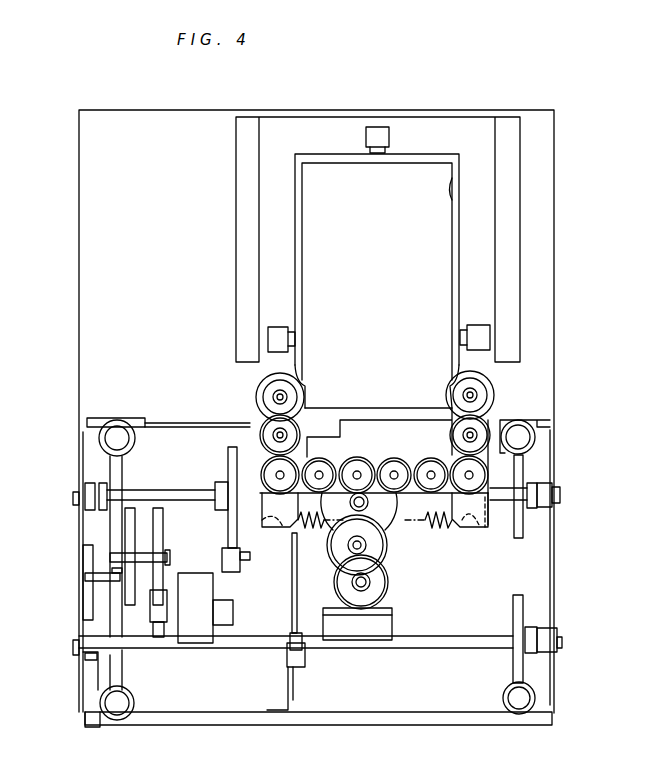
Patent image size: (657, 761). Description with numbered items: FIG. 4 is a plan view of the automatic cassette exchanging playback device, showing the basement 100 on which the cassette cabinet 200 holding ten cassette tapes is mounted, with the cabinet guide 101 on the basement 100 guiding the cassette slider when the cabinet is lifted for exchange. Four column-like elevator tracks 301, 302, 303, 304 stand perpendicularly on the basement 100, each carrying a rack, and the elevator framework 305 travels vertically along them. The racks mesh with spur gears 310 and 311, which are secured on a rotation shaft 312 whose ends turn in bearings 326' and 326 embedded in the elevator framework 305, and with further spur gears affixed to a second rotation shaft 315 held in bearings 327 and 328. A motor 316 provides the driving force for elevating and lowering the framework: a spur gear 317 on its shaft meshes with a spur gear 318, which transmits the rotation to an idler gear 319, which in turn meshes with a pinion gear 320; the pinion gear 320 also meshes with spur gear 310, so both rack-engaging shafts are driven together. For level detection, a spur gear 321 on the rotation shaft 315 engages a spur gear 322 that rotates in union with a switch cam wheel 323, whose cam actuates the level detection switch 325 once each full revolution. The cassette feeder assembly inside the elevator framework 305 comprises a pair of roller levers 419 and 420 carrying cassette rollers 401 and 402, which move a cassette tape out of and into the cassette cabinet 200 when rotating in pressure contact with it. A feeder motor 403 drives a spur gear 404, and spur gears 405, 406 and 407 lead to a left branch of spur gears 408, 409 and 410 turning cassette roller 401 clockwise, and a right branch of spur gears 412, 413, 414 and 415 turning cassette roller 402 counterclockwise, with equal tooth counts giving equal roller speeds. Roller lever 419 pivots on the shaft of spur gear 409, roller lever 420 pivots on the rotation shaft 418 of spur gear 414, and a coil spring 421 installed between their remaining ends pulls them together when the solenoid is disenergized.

The basement 100 is at (582, 83).
The cassette cabinet 200 is at (437, 172).
The cabinet guide 101 is at (390, 128).
The elevator track 301 is at (117, 722).
The elevator track 302 is at (537, 700).
The elevator track 303 is at (120, 418).
The elevator track 304 is at (533, 440).
The elevator framework 305 is at (556, 560).
The spur gear 310 is at (117, 675).
The spur gear 311 is at (513, 612).
The rotation shaft 312 is at (440, 650).
The rotation shaft 315 is at (188, 495).
The motor 316 is at (222, 640).
The spur gear 317 is at (158, 625).
The spur gear 318 is at (164, 522).
The idler gear 319 is at (110, 556).
The pinion gear 320 is at (112, 577).
The spur gear 321 is at (230, 462).
The spur gear 322 is at (226, 572).
The switch cam wheel 323 is at (292, 622).
The level detection switch 325 is at (296, 664).
The bearing 326 is at (569, 638).
The bearing 326' is at (58, 671).
The bearing 327 is at (85, 496).
The bearing 328 is at (545, 500).
The cassette roller 401 is at (257, 390).
The cassette roller 402 is at (493, 398).
The feeder motor 403 is at (389, 582).
The spur gear 404 is at (372, 587).
The spur gear 405 is at (380, 548).
The spur gear 406 is at (378, 508).
The spur gear 407 is at (357, 470).
The spur gear 408 is at (294, 472).
The spur gear 409 is at (319, 470).
The spur gear 410 is at (262, 430).
The spur gear 412 is at (394, 470).
The spur gear 413 is at (431, 470).
The spur gear 414 is at (477, 478).
The spur gear 415 is at (478, 430).
The rotation shaft 418 is at (470, 482).
The roller lever 419 is at (262, 468).
The roller lever 420 is at (485, 528).
The coil spring 421 is at (310, 522).